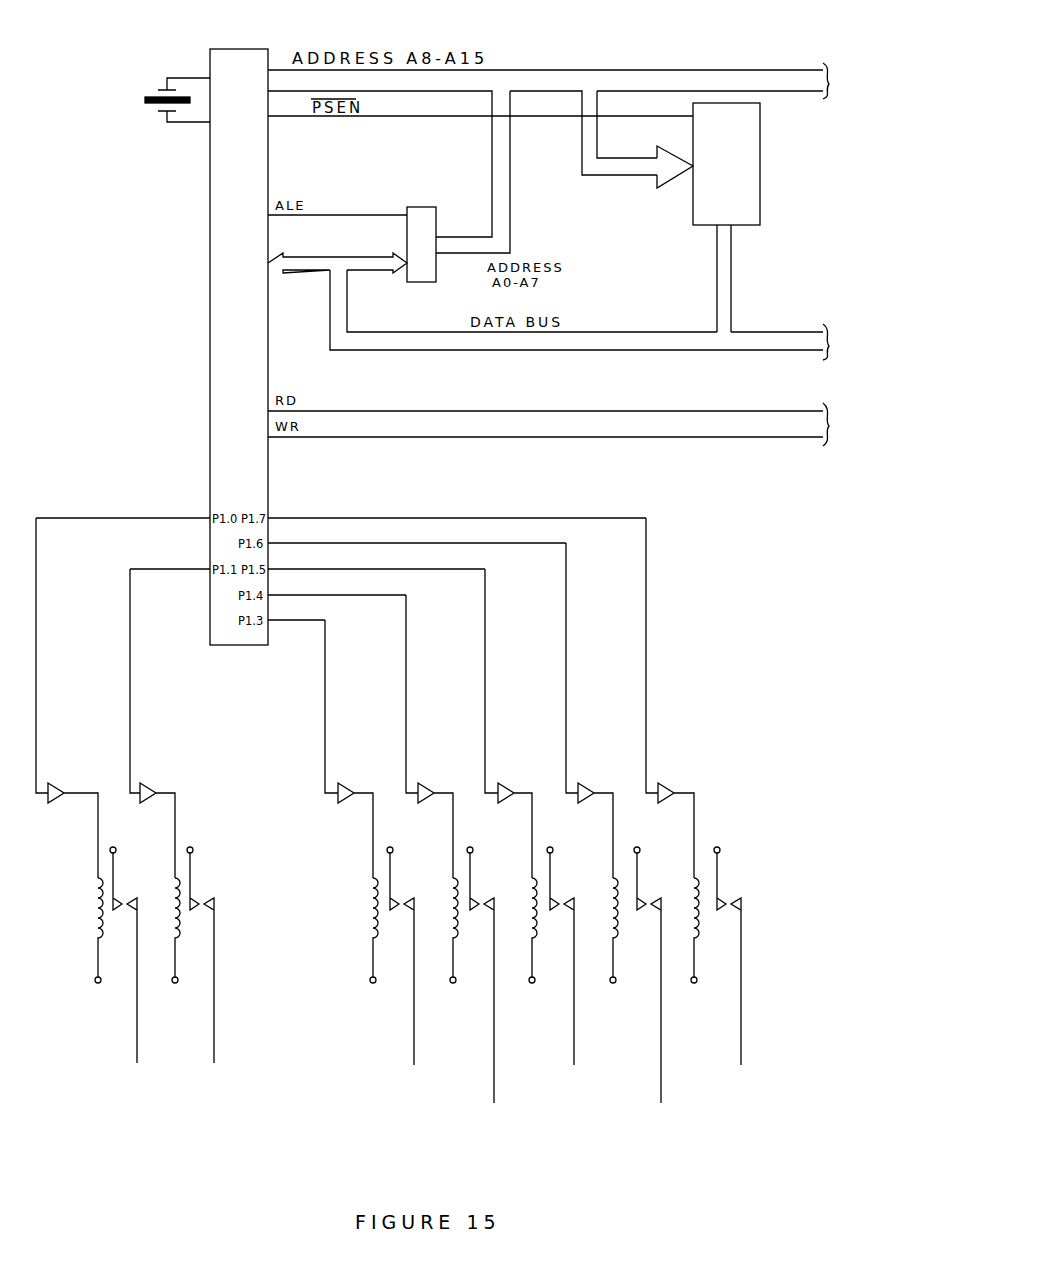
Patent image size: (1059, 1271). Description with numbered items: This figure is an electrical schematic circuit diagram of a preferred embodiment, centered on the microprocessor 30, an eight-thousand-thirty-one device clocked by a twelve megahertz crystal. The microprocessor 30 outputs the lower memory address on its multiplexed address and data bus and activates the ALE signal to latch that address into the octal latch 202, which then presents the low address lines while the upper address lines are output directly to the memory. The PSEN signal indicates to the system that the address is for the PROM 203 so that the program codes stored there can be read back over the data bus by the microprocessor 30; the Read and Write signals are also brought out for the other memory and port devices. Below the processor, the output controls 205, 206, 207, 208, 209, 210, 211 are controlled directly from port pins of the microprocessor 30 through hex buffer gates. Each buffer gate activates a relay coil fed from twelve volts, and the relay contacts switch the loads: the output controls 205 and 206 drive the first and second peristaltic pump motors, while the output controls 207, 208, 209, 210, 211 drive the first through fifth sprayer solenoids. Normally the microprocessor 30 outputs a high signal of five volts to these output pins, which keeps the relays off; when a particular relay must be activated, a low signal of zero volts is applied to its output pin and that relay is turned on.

The microprocessor 30 is at (229, 47).
The 74HC373 202 is at (438, 221).
The PROM 203 is at (762, 175).
The output control 205 is at (93, 906).
The output control 206 is at (172, 904).
The output control 207 is at (369, 914).
The output control 208 is at (450, 927).
The output control 209 is at (546, 947).
The output control 210 is at (635, 947).
The output control 211 is at (736, 882).